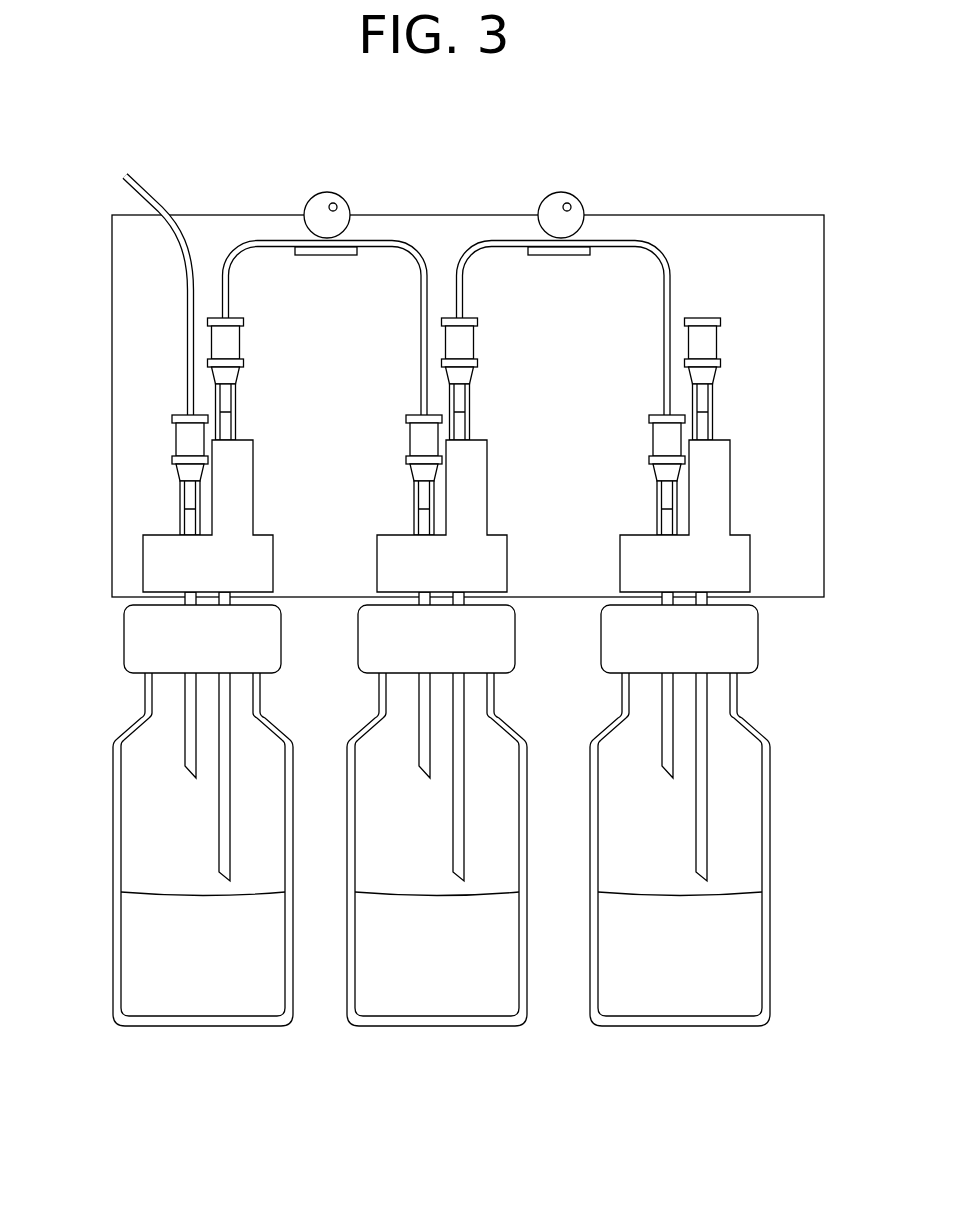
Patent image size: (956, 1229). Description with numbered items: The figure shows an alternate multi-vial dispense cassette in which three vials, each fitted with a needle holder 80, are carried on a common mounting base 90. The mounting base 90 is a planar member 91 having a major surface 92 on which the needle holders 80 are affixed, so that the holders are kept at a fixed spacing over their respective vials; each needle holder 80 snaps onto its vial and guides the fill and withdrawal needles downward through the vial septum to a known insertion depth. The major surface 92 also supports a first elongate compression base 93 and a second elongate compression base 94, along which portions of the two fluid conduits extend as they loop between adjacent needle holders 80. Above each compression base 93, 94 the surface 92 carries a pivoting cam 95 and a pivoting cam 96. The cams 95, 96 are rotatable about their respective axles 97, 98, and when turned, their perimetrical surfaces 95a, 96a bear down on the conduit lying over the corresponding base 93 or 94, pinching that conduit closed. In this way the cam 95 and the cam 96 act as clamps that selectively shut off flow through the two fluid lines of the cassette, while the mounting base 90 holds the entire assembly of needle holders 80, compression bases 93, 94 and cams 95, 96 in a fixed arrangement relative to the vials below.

The needle holder 80 is at (139, 548).
The mounting base 90 is at (438, 582).
The planar member 91 is at (112, 333).
The major surface 92 is at (159, 396).
The first elongate compression base 93 is at (343, 257).
The second elongate compression base 94 is at (577, 257).
The pivoting cam 95 is at (335, 193).
The perimetrical surface 95a is at (303, 227).
The pivoting cam 96 is at (570, 192).
The perimetrical surface 96a is at (535, 227).
The axle 97 is at (329, 204).
The axle 98 is at (563, 204).